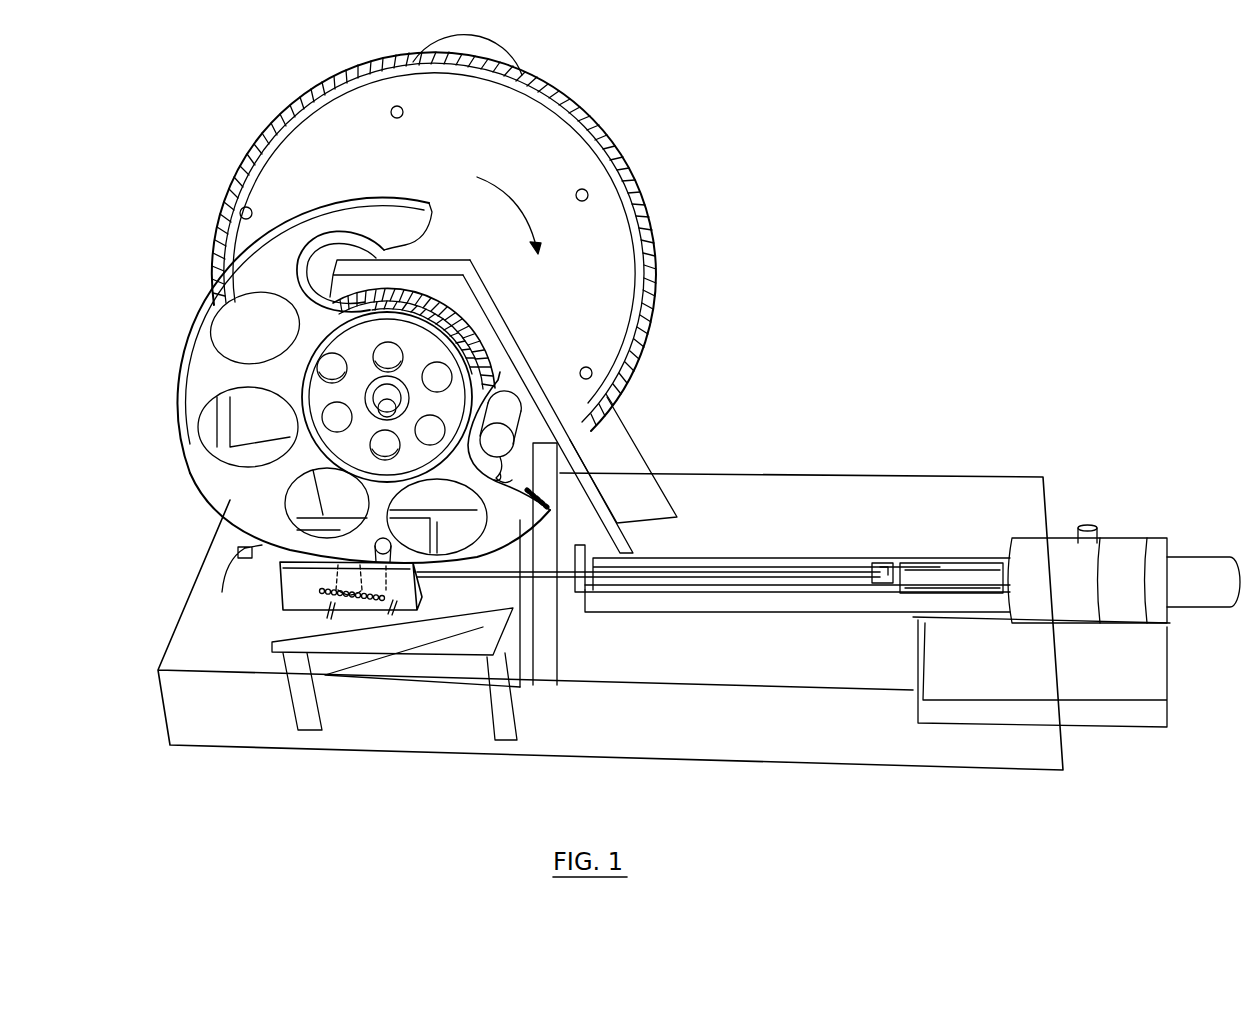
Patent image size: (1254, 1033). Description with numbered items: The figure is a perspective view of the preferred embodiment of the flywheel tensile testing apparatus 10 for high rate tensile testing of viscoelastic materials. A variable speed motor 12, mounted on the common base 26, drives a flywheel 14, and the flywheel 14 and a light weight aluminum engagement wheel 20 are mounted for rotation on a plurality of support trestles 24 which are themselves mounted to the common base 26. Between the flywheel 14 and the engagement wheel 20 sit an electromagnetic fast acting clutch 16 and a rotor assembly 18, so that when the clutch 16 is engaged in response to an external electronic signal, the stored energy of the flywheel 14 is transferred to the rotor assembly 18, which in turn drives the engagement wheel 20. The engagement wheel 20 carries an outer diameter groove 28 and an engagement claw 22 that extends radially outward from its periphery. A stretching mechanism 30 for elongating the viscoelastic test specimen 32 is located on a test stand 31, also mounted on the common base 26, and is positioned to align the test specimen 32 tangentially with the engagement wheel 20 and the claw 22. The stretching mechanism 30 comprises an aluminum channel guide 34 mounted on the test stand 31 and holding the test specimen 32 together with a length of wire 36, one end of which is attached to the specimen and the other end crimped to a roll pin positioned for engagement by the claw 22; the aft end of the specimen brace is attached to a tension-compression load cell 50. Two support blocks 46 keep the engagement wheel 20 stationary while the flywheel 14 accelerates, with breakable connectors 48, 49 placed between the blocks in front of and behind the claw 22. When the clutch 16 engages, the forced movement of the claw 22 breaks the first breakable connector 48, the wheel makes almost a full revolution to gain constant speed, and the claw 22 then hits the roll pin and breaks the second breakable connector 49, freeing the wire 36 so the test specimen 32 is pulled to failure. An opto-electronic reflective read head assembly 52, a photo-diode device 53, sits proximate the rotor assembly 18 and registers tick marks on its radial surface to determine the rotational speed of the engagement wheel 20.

The flywheel tensile testing apparatus 10 is at (795, 231).
The variable speed motor 12 is at (503, 65).
The flywheel 14 is at (586, 110).
The electromagnetic fast acting clutch 16 is at (441, 284).
The rotor assembly 18 is at (467, 327).
The light weight aluminum engagement wheel 20 is at (357, 200).
The engagement claw 22 is at (385, 546).
The support trestles 24 is at (630, 542).
The common base 26 is at (392, 752).
The outer diameter groove 28 is at (440, 210).
The stretching mechanism 30 is at (610, 630).
The test stand 31 is at (518, 700).
The viscoelastic test specimen 32 is at (935, 566).
The aluminum channel guide 34 is at (779, 572).
The length of wire 36 is at (582, 548).
The support blocks 46 is at (298, 594).
The first breakable connector 48 is at (320, 612).
The second breakable connector 49 is at (392, 620).
The tension-compression load cell 50 is at (1003, 557).
The opto-electronic reflective read head assembly 52 is at (510, 404).
The photo-diode device 53 is at (525, 360).